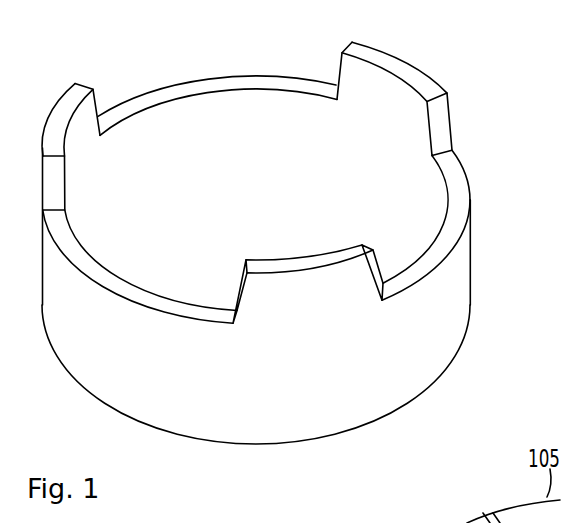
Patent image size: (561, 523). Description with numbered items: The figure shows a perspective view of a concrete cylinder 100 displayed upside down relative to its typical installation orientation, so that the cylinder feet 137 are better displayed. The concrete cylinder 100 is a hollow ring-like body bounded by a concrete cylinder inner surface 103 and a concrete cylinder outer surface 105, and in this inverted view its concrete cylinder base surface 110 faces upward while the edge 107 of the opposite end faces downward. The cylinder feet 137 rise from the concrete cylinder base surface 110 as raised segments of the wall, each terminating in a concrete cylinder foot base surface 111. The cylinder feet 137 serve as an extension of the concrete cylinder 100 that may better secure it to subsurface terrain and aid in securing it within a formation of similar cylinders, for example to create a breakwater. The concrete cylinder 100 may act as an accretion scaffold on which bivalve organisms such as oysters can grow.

The concrete cylinder 100 is at (472, 254).
The concrete cylinder inner surface 103 is at (352, 213).
The concrete cylinder outer surface 105 is at (448, 322).
The bottom edge 107 is at (97, 402).
The concrete cylinder base surface 110 is at (458, 210).
The concrete cylinder foot base surface 111 is at (427, 80).
The cylinder feet 137 is at (88, 85).